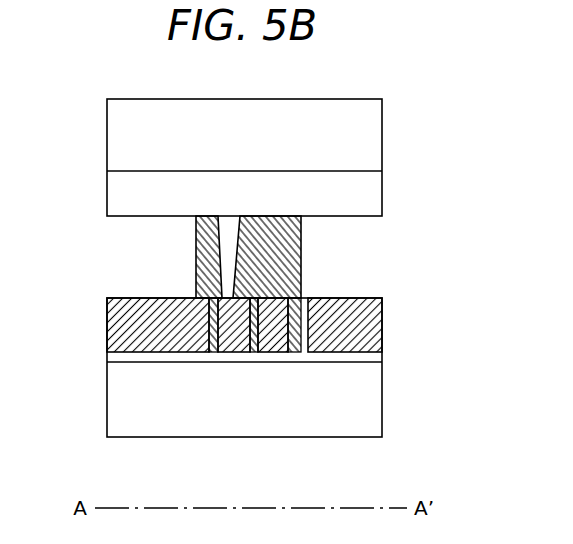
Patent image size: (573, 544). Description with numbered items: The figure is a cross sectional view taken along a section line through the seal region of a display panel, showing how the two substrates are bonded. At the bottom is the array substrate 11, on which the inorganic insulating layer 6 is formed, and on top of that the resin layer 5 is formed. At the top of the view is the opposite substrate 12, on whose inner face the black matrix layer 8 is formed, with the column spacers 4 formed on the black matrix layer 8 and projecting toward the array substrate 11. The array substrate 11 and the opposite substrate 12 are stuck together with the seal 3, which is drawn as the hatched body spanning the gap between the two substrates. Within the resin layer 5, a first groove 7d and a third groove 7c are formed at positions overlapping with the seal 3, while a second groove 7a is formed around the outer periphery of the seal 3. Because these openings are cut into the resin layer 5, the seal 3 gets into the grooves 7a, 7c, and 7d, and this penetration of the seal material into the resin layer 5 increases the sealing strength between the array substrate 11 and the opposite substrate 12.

The opposite substrate 12 is at (392, 99).
The black matrix layer 8 is at (118, 191).
The column spacer 4 is at (230, 240).
The seal 3 is at (290, 264).
The resin layer 5 is at (356, 298).
The first groove 7d is at (212, 352).
The third groove 7c is at (252, 352).
The second groove 7a is at (298, 352).
The inorganic insulating layer 6 is at (118, 352).
The array substrate 11 is at (392, 298).